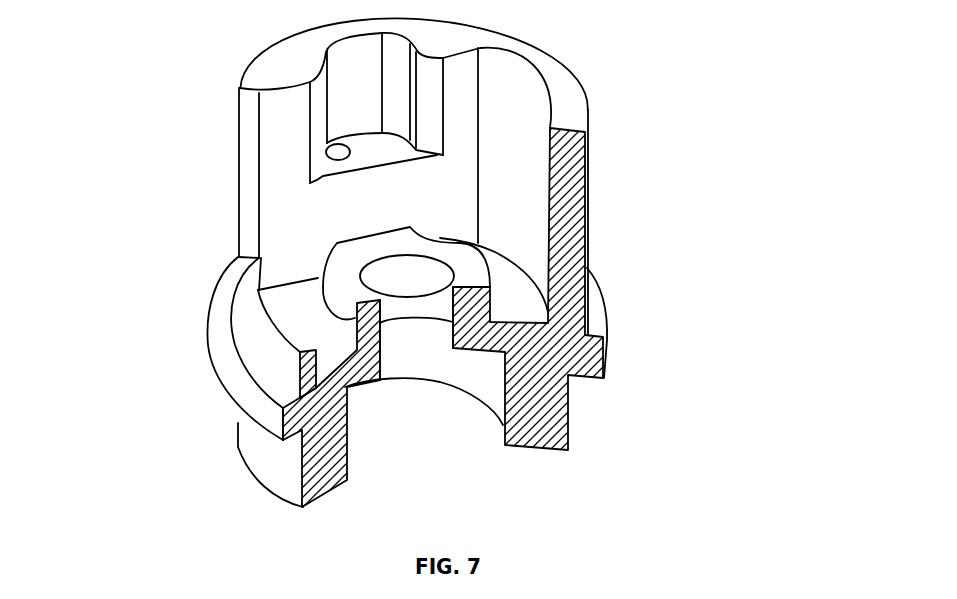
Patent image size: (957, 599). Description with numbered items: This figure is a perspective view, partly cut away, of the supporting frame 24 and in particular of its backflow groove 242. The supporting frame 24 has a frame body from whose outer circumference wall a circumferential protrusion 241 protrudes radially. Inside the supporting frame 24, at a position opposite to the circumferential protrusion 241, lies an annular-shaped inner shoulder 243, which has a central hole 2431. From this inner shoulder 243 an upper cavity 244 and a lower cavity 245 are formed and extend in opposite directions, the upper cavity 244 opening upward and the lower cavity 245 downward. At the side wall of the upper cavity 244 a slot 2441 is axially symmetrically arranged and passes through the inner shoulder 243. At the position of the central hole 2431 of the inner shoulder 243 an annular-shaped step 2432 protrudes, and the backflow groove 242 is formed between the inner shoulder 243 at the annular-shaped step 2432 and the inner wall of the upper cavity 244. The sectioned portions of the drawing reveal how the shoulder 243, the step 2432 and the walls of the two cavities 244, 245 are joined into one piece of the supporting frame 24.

The supporting frame 24 is at (223, 107).
The slot 2441 is at (357, 93).
The upper cavity 244 is at (570, 228).
The annular-shaped inner shoulder 243 is at (505, 308).
The backflow groove 242 is at (508, 286).
The circumferential protrusion 241 is at (592, 363).
The lower cavity 245 is at (557, 430).
The annular-shaped step 2432 is at (390, 245).
The central hole 2431 is at (412, 292).